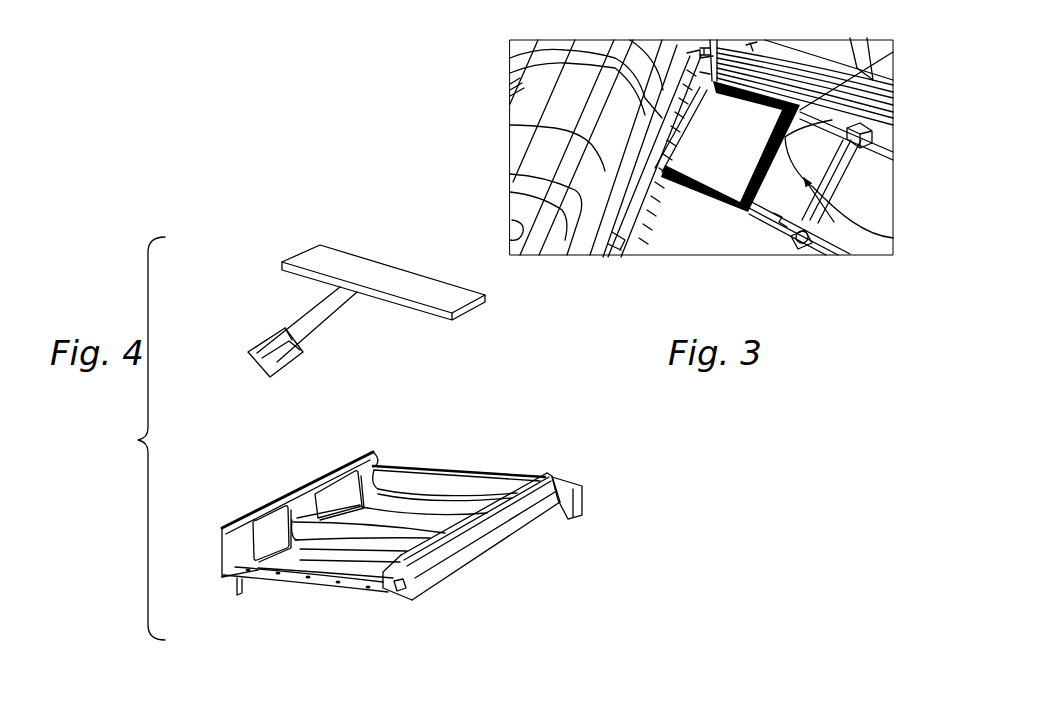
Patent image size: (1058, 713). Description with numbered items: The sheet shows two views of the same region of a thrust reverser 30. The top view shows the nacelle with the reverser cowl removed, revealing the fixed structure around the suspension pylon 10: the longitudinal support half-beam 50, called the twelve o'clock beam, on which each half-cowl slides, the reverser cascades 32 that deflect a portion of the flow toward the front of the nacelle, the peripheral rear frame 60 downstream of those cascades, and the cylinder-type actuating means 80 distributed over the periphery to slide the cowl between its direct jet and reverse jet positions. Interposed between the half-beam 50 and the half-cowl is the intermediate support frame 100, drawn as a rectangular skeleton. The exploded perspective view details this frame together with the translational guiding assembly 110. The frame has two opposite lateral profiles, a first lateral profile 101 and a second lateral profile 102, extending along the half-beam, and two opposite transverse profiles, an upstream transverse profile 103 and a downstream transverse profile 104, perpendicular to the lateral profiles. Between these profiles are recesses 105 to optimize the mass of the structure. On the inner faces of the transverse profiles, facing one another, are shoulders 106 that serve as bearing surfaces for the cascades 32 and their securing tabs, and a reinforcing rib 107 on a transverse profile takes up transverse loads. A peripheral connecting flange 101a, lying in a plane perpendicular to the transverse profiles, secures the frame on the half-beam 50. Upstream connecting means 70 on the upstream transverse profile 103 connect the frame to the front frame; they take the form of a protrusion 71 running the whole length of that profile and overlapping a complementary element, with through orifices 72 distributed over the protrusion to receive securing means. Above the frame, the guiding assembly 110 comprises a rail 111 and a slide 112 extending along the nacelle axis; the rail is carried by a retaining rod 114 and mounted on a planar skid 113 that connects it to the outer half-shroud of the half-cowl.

In FIG. 3, the suspension pylon 10 is at (512, 177).
In FIG. 3, the thrust reverser 30 is at (880, 240).
In FIG. 3, the reverser cascades 32 is at (870, 202).
In FIG. 3, the longitudinal support half-beam 50 is at (620, 232).
In FIG. 3, the peripheral rear frame 60 is at (780, 230).
In FIG. 3, the cylinder-type actuating means 80 is at (810, 245).
In FIG. 3, the intermediate support frame 100 is at (889, 55).
In FIG. 4, the intermediate support frame 100 is at (389, 540).
In FIG. 4, the first lateral profile 101 is at (238, 556).
In FIG. 4, the peripheral connecting flange 101a is at (238, 537).
In FIG. 3, the second lateral profile 102 is at (888, 163).
In FIG. 4, the second lateral profile 102 is at (457, 555).
In FIG. 3, the upstream transverse profile 103 is at (735, 80).
In FIG. 4, the upstream transverse profile 103 is at (273, 586).
In FIG. 3, the downstream transverse profile 104 is at (688, 195).
In FIG. 4, the downstream transverse profile 104 is at (450, 461).
In FIG. 4, the recesses 105 is at (453, 513).
In FIG. 4, the shoulders 106 is at (490, 536).
In FIG. 4, the reinforcing rib 107 is at (460, 557).
In FIG. 4, the translational guiding assembly 110 is at (127, 438).
In FIG. 4, the rail 111 is at (275, 374).
In FIG. 4, the slide 112 is at (394, 595).
In FIG. 4, the planar skid 113 is at (341, 262).
In FIG. 4, the retaining rod 114 is at (305, 323).
In FIG. 4, the upstream connecting means 70 is at (305, 615).
In FIG. 4, the protrusion 71 is at (320, 580).
In FIG. 4, the through orifice 72 is at (367, 592).